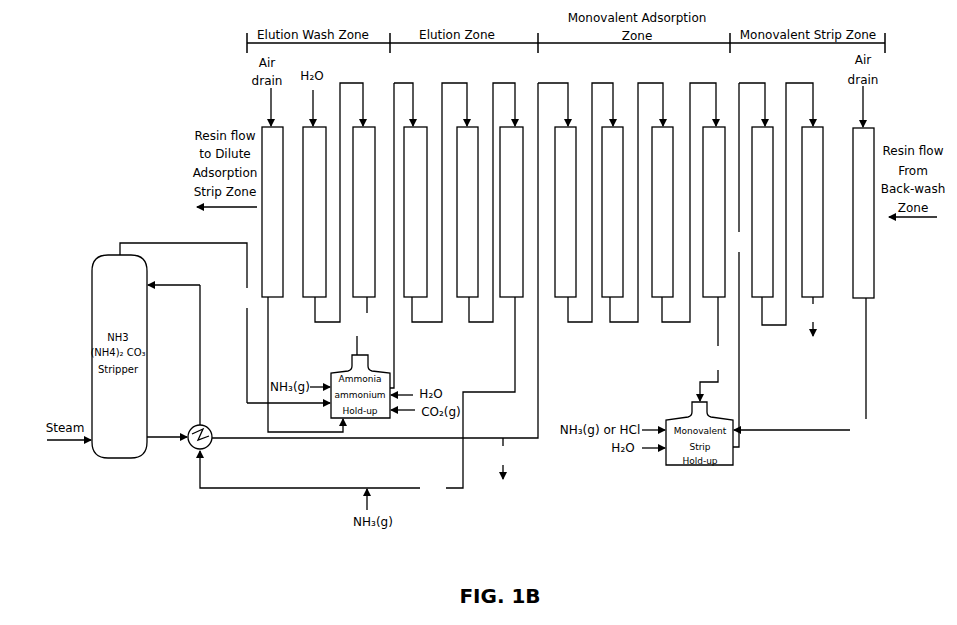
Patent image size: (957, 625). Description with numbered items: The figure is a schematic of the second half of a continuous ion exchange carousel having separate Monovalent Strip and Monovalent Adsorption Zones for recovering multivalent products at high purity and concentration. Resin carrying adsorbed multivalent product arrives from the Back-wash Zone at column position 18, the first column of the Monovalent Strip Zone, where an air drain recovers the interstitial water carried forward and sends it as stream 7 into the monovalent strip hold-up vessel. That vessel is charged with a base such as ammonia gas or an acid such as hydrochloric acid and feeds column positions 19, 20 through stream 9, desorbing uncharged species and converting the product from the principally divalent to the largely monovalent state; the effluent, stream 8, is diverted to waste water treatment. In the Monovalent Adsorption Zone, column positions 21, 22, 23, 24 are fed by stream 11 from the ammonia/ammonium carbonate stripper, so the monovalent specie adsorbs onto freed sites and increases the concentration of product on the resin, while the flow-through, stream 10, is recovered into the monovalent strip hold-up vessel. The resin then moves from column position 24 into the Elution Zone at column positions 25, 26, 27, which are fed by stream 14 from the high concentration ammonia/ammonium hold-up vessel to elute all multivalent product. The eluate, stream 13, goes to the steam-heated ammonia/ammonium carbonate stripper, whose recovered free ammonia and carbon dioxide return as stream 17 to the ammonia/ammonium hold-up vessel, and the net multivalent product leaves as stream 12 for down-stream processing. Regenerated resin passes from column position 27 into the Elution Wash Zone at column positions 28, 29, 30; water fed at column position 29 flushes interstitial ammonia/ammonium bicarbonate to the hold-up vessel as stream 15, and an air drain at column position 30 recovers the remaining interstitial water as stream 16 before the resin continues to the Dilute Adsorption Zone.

The stream 7 is at (800, 367).
The stream 8 is at (813, 316).
The stream 9 is at (737, 265).
The stream 10 is at (710, 349).
The stream 11 is at (378, 260).
The stream 12 is at (502, 458).
The stream 13 is at (357, 396).
The stream 14 is at (387, 235).
The stream 15 is at (358, 326).
The stream 16 is at (295, 364).
The stream 17 is at (185, 323).
The column position 18 is at (863, 213).
The column position 19 is at (812, 212).
The column position 20 is at (762, 212).
The column position 21 is at (714, 212).
The column position 22 is at (662, 212).
The column position 23 is at (612, 212).
The column position 24 is at (565, 212).
The column position 25 is at (511, 212).
The column position 26 is at (467, 212).
The column position 27 is at (415, 212).
The column position 28 is at (364, 212).
The column position 29 is at (314, 212).
The column position 30 is at (272, 212).